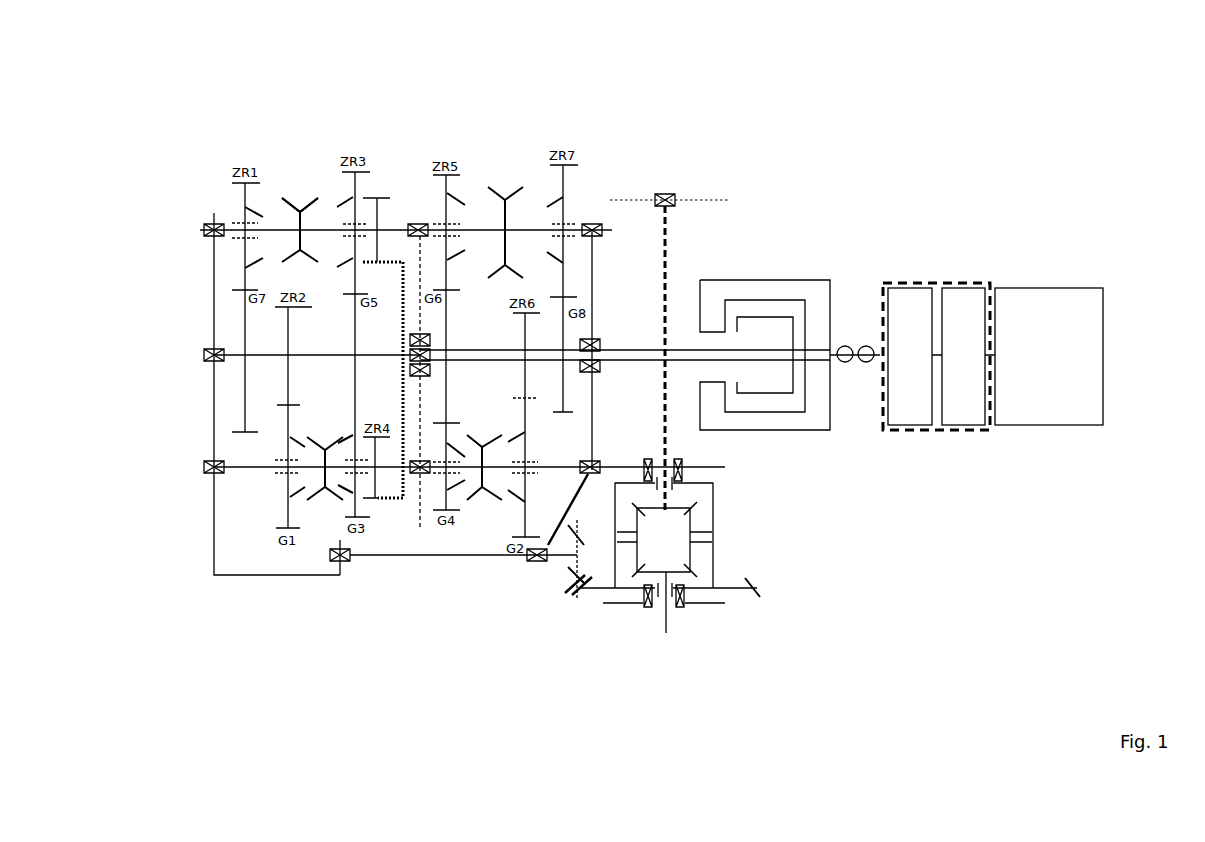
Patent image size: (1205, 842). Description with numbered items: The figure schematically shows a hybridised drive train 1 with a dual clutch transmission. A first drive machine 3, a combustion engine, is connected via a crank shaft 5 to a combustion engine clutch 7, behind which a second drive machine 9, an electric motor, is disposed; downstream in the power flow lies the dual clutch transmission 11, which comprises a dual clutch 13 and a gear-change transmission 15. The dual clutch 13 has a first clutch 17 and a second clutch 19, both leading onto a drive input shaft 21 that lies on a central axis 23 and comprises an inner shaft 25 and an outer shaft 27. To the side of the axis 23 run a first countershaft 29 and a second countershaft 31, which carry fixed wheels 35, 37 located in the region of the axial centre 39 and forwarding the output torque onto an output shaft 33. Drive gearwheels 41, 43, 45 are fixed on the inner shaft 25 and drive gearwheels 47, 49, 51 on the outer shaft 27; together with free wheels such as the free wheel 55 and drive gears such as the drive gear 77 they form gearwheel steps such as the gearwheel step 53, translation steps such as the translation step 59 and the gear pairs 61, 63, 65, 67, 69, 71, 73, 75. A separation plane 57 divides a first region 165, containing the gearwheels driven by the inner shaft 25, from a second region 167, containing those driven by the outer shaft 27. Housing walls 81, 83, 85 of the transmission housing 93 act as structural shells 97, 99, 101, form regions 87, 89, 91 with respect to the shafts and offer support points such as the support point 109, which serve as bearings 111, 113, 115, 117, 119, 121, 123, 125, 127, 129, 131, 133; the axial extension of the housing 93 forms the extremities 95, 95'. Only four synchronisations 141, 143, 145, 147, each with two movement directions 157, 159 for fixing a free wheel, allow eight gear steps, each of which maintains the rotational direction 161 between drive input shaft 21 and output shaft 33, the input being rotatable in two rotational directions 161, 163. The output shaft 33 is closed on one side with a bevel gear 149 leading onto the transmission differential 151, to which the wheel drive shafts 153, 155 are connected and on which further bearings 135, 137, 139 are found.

The drive train 1 is at (694, 156).
The first drive machine 3 is at (1054, 365).
The crank shaft 5 is at (993, 360).
The combustion engine clutch 7 is at (968, 365).
The second drive machine 9 is at (916, 365).
The dual clutch transmission 11 is at (528, 136).
The dual clutch 13 is at (769, 256).
The gear-change transmission 15 is at (380, 146).
The first clutch 17 is at (803, 415).
The second clutch 19 is at (768, 395).
The drive input shaft 21 is at (594, 445).
The axis 23 is at (166, 350).
The inner shaft 25 is at (278, 362).
The outer shaft 27 is at (630, 272).
The first countershaft 29 is at (482, 235).
The second countershaft 31 is at (238, 447).
The output shaft 33 is at (445, 515).
The first fixed wheel 35 is at (365, 176).
The second fixed wheel 37 is at (355, 520).
The axial centre 39 is at (413, 180).
The drive gearwheel 41 is at (240, 532).
The drive gearwheel 43 is at (310, 195).
The drive gearwheel 45 is at (318, 200).
The drive gearwheel 47 is at (463, 200).
The drive gearwheel 49 is at (520, 262).
The drive gearwheel 51 is at (548, 252).
The gearwheel step 53 is at (242, 252).
The free wheel 55 is at (216, 200).
The separation plane 57 is at (427, 518).
The translation step 59 is at (543, 606).
The gear pair 61 is at (268, 265).
The gear pair 63 is at (367, 417).
The gear pair 65 is at (237, 446).
The gear pair 67 is at (358, 296).
The gear pair 69 is at (484, 560).
The gear pair 71 is at (418, 224).
The gear pair 73 is at (527, 540).
The gear pair 75 is at (590, 224).
The drive gear 77 is at (278, 405).
The housing wall 81 is at (560, 582).
The housing wall 83 is at (217, 550).
The housing wall 85 is at (422, 510).
The region 87 is at (540, 562).
The region 89 is at (207, 222).
The region 91 is at (379, 196).
The transmission housing 93 is at (217, 550).
The extremity 95 is at (169, 521).
The extremity 95' is at (620, 644).
The structural shell 97 is at (673, 366).
The structural shell 99 is at (212, 465).
The structural shell 101 is at (447, 562).
The support point 109 is at (205, 356).
The bearing 111 is at (208, 229).
The bearing 113 is at (416, 231).
The bearing 115 is at (593, 350).
The bearing 117 is at (210, 354).
The bearing 119 is at (430, 368).
The bearing 121 is at (421, 378).
The bearing 123 is at (592, 374).
The bearing 125 is at (200, 490).
The bearing 127 is at (406, 500).
The bearing 129 is at (590, 592).
The bearing 131 is at (340, 565).
The bearing 133 is at (578, 540).
The further bearing 135 is at (681, 608).
The further bearing 137 is at (716, 487).
The further bearing 139 is at (665, 194).
The synchronisation 141 is at (297, 207).
The synchronisation 143 is at (505, 195).
The synchronisation 145 is at (318, 497).
The synchronisation 147 is at (482, 502).
The bevel gear 149 is at (575, 534).
The transmission differential 151 is at (713, 565).
The wheel drive shaft 153 is at (666, 635).
The wheel drive shaft 155 is at (670, 248).
The movement direction 157 is at (274, 277).
The movement direction 159 is at (312, 277).
The rotational direction 161 is at (847, 346).
The rotational direction 163 is at (870, 346).
The first region 165 is at (333, 384).
The second region 167 is at (513, 384).